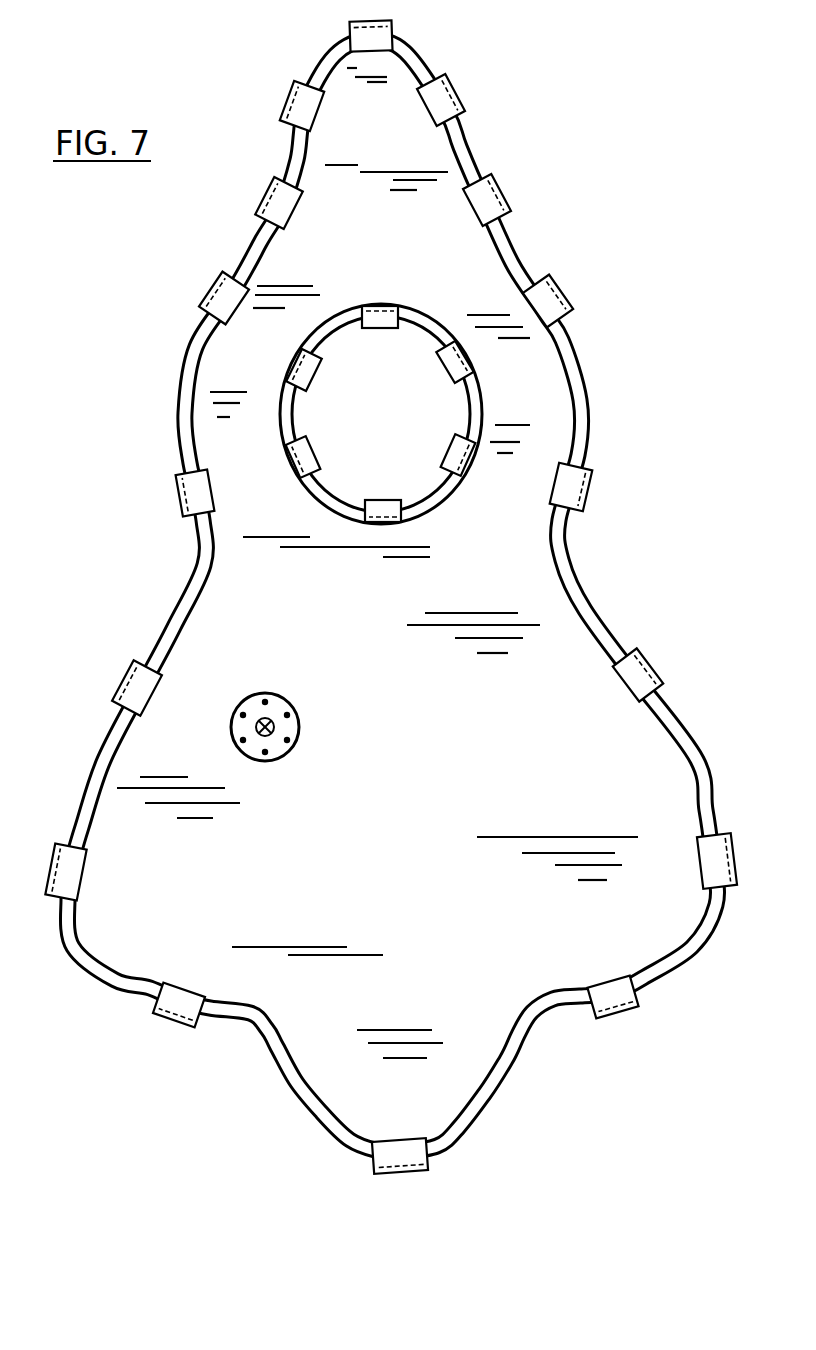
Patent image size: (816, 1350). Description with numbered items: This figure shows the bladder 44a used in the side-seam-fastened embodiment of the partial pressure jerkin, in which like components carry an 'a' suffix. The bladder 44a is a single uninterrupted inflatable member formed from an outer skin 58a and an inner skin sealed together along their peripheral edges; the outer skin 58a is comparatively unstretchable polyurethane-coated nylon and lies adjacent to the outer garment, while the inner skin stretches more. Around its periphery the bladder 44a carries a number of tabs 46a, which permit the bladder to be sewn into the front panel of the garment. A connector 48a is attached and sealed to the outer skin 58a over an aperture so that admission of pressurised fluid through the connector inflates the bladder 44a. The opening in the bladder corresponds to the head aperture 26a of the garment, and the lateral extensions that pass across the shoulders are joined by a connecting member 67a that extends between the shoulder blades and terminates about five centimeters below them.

The bladder 44a is at (255, 1054).
The tabs 46a is at (352, 34).
The head aperture 26a is at (381, 414).
The connector 48a is at (277, 696).
The outer skin 58a is at (377, 672).
The connecting member 67a is at (390, 124).